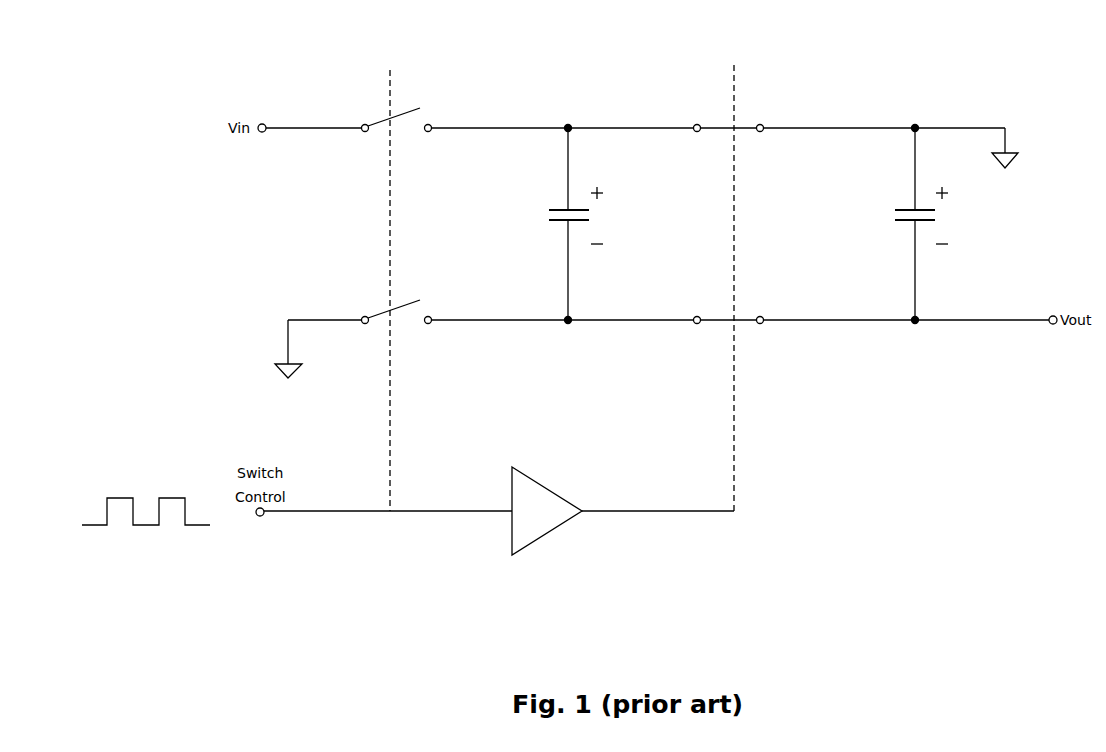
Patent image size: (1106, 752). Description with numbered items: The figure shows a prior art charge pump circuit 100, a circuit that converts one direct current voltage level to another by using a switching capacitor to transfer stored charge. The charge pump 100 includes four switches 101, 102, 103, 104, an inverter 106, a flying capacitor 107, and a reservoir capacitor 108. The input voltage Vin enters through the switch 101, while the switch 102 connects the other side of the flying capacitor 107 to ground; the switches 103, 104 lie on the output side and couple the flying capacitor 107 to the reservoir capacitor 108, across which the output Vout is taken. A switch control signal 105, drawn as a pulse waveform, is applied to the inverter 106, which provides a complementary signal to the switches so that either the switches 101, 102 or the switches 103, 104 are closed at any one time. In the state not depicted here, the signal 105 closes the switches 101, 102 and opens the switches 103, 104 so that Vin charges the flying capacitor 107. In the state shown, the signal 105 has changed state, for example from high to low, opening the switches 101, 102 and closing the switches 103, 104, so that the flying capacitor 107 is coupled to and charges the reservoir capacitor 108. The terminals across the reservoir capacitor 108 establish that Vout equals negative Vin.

The charge pump circuit 100 is at (985, 26).
The switch 101 is at (378, 118).
The switch 102 is at (376, 311).
The switch 103 is at (716, 122).
The switch 104 is at (716, 315).
The signal 105 is at (140, 487).
The inverter 106 is at (543, 535).
The flying capacitor 107 is at (562, 207).
The reservoir capacitor 108 is at (909, 207).